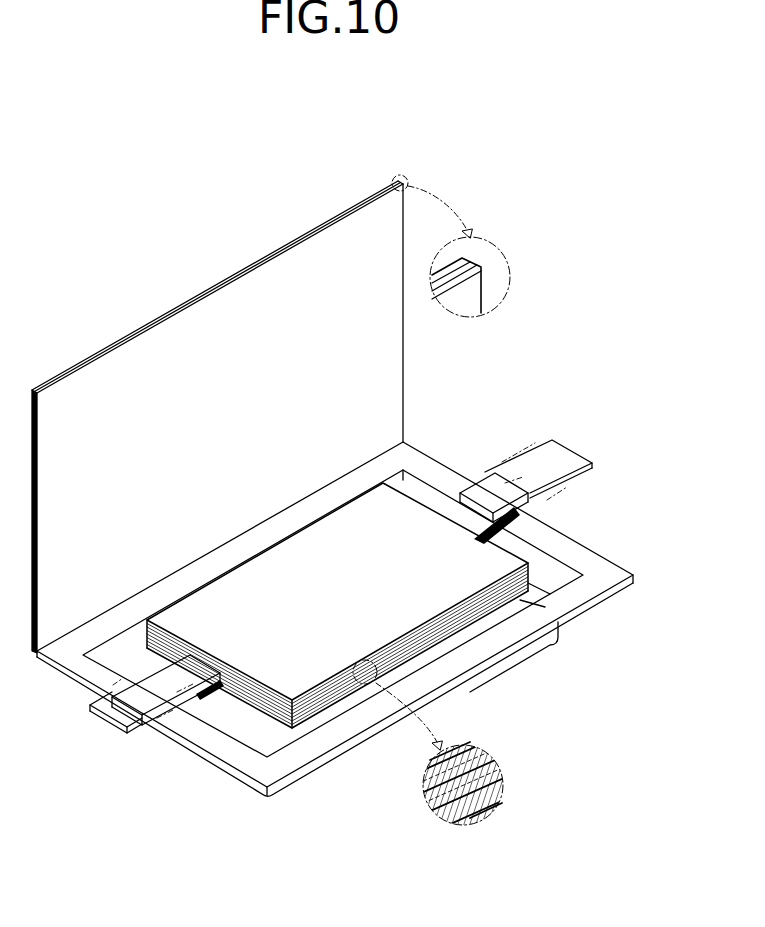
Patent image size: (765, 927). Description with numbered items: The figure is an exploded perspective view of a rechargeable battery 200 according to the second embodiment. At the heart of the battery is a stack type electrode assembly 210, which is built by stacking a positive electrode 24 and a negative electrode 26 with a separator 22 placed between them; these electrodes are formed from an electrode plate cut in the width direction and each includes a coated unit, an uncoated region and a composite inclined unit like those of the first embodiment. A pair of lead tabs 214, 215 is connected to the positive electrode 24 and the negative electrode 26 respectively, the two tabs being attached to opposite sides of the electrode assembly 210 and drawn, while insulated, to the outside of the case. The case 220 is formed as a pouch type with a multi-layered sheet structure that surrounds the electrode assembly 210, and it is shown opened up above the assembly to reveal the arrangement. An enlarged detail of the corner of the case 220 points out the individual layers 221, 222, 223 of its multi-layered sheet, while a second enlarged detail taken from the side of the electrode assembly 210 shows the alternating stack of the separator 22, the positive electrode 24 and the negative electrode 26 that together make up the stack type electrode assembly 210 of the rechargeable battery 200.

The rechargeable battery 200 is at (132, 190).
The stack type electrode assembly 210 is at (357, 600).
The lead tab 214 is at (100, 722).
The lead tab 215 is at (572, 453).
The case 220 is at (262, 249).
The first layer of panel 221 is at (481, 271).
The second layer of panel 222 is at (462, 258).
The third layer of panel 223 is at (477, 265).
The separator 22 is at (497, 762).
The positive electrode 24 is at (483, 752).
The negative electrode 26 is at (503, 777).